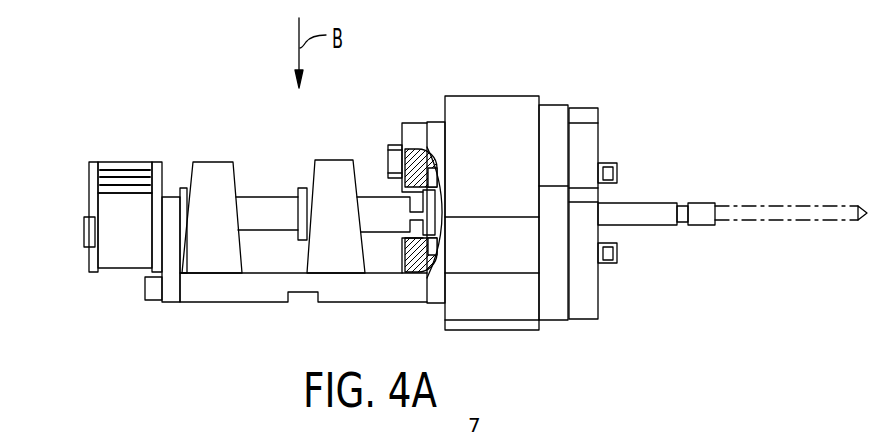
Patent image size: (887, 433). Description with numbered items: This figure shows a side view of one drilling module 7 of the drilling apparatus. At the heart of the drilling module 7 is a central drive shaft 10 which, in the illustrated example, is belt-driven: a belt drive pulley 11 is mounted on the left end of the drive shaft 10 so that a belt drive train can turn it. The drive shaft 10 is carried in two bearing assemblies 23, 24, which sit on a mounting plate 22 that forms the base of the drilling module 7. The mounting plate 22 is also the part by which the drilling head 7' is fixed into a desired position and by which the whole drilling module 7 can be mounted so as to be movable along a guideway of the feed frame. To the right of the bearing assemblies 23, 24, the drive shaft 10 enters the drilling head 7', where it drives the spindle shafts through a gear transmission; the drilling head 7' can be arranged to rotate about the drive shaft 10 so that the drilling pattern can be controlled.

The drilling module 7 is at (647, 161).
The drilling head 7' is at (492, 186).
The central drive shaft 10 is at (252, 208).
The belt drive pulley 11 is at (131, 167).
The mounting plate 22 is at (412, 287).
The bearing assembly 23 is at (218, 173).
The bearing assembly 24 is at (320, 172).